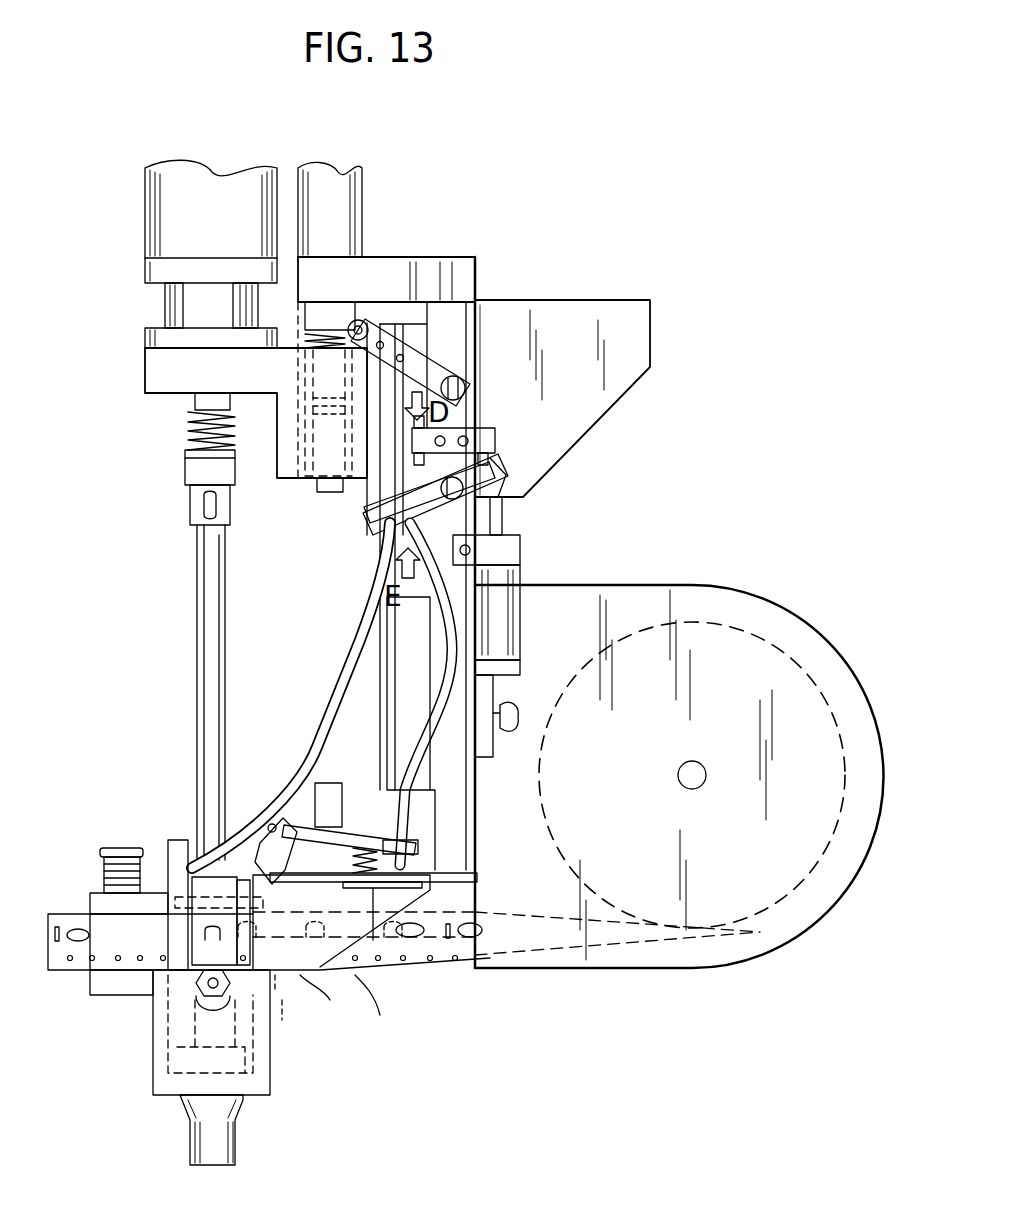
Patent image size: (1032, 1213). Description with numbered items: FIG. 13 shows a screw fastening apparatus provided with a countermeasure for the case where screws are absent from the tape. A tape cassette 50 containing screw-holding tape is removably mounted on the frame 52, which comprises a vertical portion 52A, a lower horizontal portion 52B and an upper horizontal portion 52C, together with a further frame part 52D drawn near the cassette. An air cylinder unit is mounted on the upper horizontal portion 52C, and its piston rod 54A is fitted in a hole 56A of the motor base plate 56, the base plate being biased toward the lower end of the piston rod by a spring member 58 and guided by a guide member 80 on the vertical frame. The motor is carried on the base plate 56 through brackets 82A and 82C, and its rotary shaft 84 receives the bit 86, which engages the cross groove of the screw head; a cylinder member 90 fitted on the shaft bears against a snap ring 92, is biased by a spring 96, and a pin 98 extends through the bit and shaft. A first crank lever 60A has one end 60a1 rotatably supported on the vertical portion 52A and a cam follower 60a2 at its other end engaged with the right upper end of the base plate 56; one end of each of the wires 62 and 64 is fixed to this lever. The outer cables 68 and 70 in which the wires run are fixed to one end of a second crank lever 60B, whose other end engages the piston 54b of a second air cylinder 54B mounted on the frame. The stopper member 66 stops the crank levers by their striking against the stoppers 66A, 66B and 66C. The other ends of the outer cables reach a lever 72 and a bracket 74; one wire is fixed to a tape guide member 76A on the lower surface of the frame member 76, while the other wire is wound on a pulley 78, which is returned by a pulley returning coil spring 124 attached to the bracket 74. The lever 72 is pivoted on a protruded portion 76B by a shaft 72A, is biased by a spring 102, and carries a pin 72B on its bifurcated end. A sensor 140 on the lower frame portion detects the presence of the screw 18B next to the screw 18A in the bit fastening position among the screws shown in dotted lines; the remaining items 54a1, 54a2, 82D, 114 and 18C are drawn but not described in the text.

The screw in the bit fastening position 18A is at (165, 1040).
The next screw 18B is at (290, 1000).
The guide lines 18C is at (385, 980).
The tape cassette 50 is at (660, 758).
The frame 52 is at (465, 622).
The vertical portion of the frame 52A is at (463, 796).
The lower horizontal portion of the frame 52B is at (330, 1000).
The upper horizontal portion of the frame 52C is at (430, 262).
The frame lower member 52D is at (520, 700).
The piston rod 54A is at (335, 210).
The second air cylinder 54B is at (520, 590).
The piston rod 54a1 is at (325, 320).
The piston rod 54a2 is at (348, 470).
The piston of the second air cylinder 54b is at (502, 515).
The motor base plate 56 is at (160, 395).
The hole in the motor base plate 56A is at (330, 492).
The spring member 58 is at (305, 340).
The first crank lever 60A is at (430, 318).
The second crank lever 60B is at (520, 497).
The one end of the first crank lever 60a1 is at (476, 355).
The cam follower 60a2 is at (355, 330).
The wire 62 is at (410, 395).
The wire 64 is at (395, 525).
The stopper member 66 is at (495, 440).
The stopper 66A is at (445, 425).
The stopper 66B is at (500, 482).
The stopper 66C is at (505, 462).
The outer cable 68 is at (346, 668).
The outer cable 70 is at (440, 600).
The lever 72 is at (372, 790).
The shaft 72A is at (242, 855).
The pin 72B is at (200, 890).
The bracket 74 is at (95, 900).
The frame member 76 is at (468, 860).
The tape guide member 76A is at (390, 975).
The protruded portion 76B is at (270, 820).
The pulley 78 is at (178, 842).
The guide member 80 is at (400, 690).
The bracket 82A is at (183, 300).
The bracket 82C is at (152, 337).
The cylinder block 82D is at (163, 276).
The rotary shaft 84 is at (195, 420).
The bit 86 is at (198, 603).
The cylinder member 90 is at (200, 500).
The snap ring 92 is at (205, 530).
The spring 96 is at (195, 465).
The pin 98 is at (222, 545).
The spring 102 is at (352, 860).
The base block 114 is at (128, 995).
The pulley returning coil spring 124 is at (100, 855).
The sensor 140 is at (330, 970).